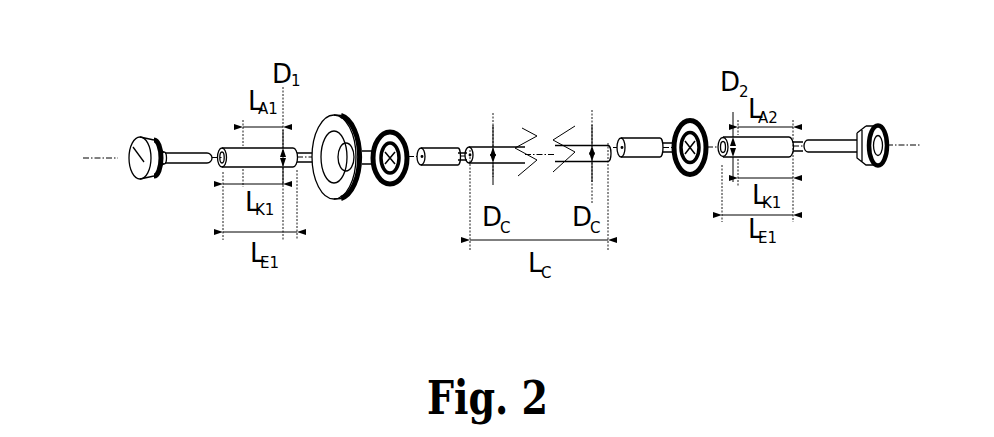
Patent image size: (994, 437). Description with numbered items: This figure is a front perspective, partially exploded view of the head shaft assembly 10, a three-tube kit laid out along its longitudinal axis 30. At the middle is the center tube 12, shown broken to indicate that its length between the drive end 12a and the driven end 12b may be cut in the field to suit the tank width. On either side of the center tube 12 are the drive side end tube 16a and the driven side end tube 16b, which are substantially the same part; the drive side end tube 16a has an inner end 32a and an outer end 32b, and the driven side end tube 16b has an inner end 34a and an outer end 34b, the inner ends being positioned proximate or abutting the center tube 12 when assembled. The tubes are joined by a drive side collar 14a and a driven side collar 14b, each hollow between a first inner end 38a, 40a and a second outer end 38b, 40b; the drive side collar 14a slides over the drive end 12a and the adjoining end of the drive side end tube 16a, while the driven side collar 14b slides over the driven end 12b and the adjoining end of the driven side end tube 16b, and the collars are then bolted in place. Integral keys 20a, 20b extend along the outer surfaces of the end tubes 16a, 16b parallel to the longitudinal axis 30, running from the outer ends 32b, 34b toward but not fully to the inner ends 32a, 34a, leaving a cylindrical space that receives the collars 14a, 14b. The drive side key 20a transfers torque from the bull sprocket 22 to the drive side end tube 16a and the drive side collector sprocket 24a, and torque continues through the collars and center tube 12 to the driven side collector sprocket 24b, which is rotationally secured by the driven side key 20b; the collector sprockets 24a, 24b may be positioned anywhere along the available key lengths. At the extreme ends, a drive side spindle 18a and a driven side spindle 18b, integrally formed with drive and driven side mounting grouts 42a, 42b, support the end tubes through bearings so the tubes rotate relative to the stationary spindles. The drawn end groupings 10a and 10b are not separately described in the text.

The head shaft assembly 10 is at (462, 52).
The first end assembly 10a is at (233, 90).
The second end assembly 10b is at (797, 95).
The center tube 12 is at (512, 143).
The drive end 12a is at (469, 147).
The driven end 12b is at (610, 145).
The drive side collar 14a is at (462, 164).
The driven side collar 14b is at (667, 154).
The drive side end tube 16a is at (222, 168).
The driven side end tube 16b is at (786, 157).
The drive side spindle 18a is at (163, 147).
The driven side spindle 18b is at (878, 160).
The drive side integral key 20a is at (235, 148).
The driven side integral key 20b is at (788, 137).
The bull sprocket 22 is at (333, 115).
The drive side collector sprocket 24a is at (392, 185).
The driven side collector sprocket 24b is at (690, 120).
The longitudinal axis 30 is at (118, 158).
The inner end of drive side end tube 32a is at (297, 150).
The outer end of drive side end tube 32b is at (205, 166).
The inner end of driven side end tube 34a is at (720, 139).
The outer end of driven side end tube 34b is at (795, 147).
The first inner end of drive side collar 38a is at (460, 148).
The second outer end of drive side collar 38b is at (422, 166).
The first inner end of driven side collar 40a is at (643, 157).
The second outer end of driven side collar 40b is at (662, 138).
The drive side mounting grout 42a is at (136, 142).
The driven side mounting grout 42b is at (880, 127).